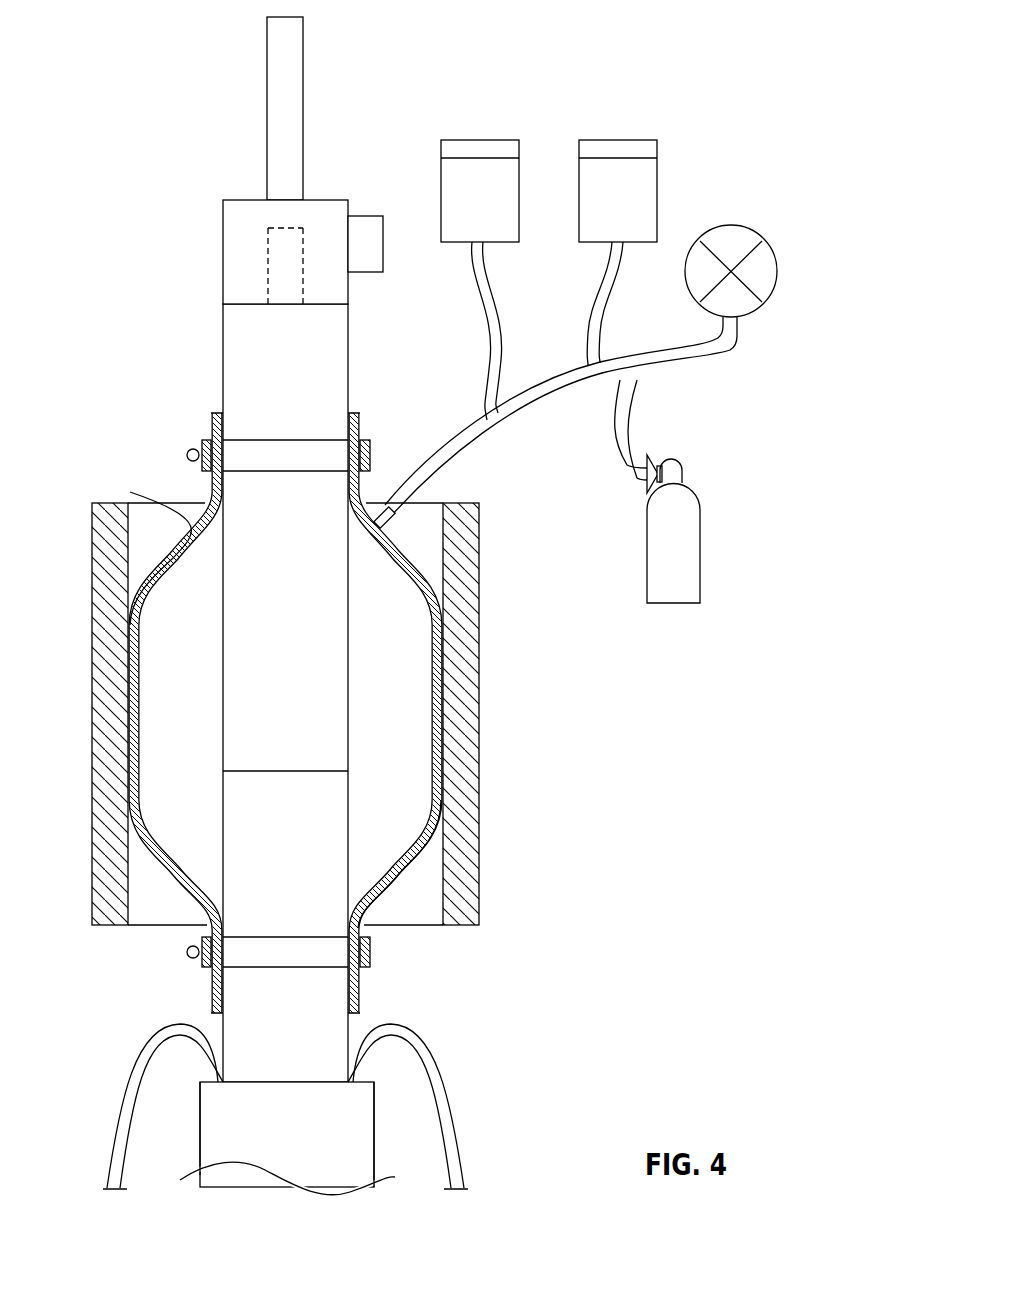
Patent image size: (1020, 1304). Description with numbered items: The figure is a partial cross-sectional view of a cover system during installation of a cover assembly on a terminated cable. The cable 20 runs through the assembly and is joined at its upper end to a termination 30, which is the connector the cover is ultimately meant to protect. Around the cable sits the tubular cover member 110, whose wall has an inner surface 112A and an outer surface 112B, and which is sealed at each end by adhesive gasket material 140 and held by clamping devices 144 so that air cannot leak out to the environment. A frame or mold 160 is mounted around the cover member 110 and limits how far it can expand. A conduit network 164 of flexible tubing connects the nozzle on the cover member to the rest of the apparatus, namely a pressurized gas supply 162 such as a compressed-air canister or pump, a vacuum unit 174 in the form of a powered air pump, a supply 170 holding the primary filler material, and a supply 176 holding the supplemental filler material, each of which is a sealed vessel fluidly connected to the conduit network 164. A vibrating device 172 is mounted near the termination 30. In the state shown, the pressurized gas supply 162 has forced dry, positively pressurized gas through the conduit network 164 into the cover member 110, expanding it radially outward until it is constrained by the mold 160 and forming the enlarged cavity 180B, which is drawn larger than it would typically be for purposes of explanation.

The cable 20 is at (223, 352).
The termination 30 is at (223, 240).
The cover member 110 is at (437, 655).
The inner surface 112A is at (413, 840).
The outer surface 112B is at (412, 865).
The adhesive gasket material 140 is at (318, 962).
The clamping devices 144 is at (186, 455).
The mold 160 is at (467, 707).
The pressurized gas supply 162 is at (688, 530).
The conduit network 164 is at (527, 410).
The supply of filler material 170 is at (616, 140).
The vibrating device 172 is at (362, 225).
The vacuum unit 174 is at (743, 240).
The supply of supplemental filler material 176 is at (478, 140).
The enlarged cavity 180B is at (421, 718).